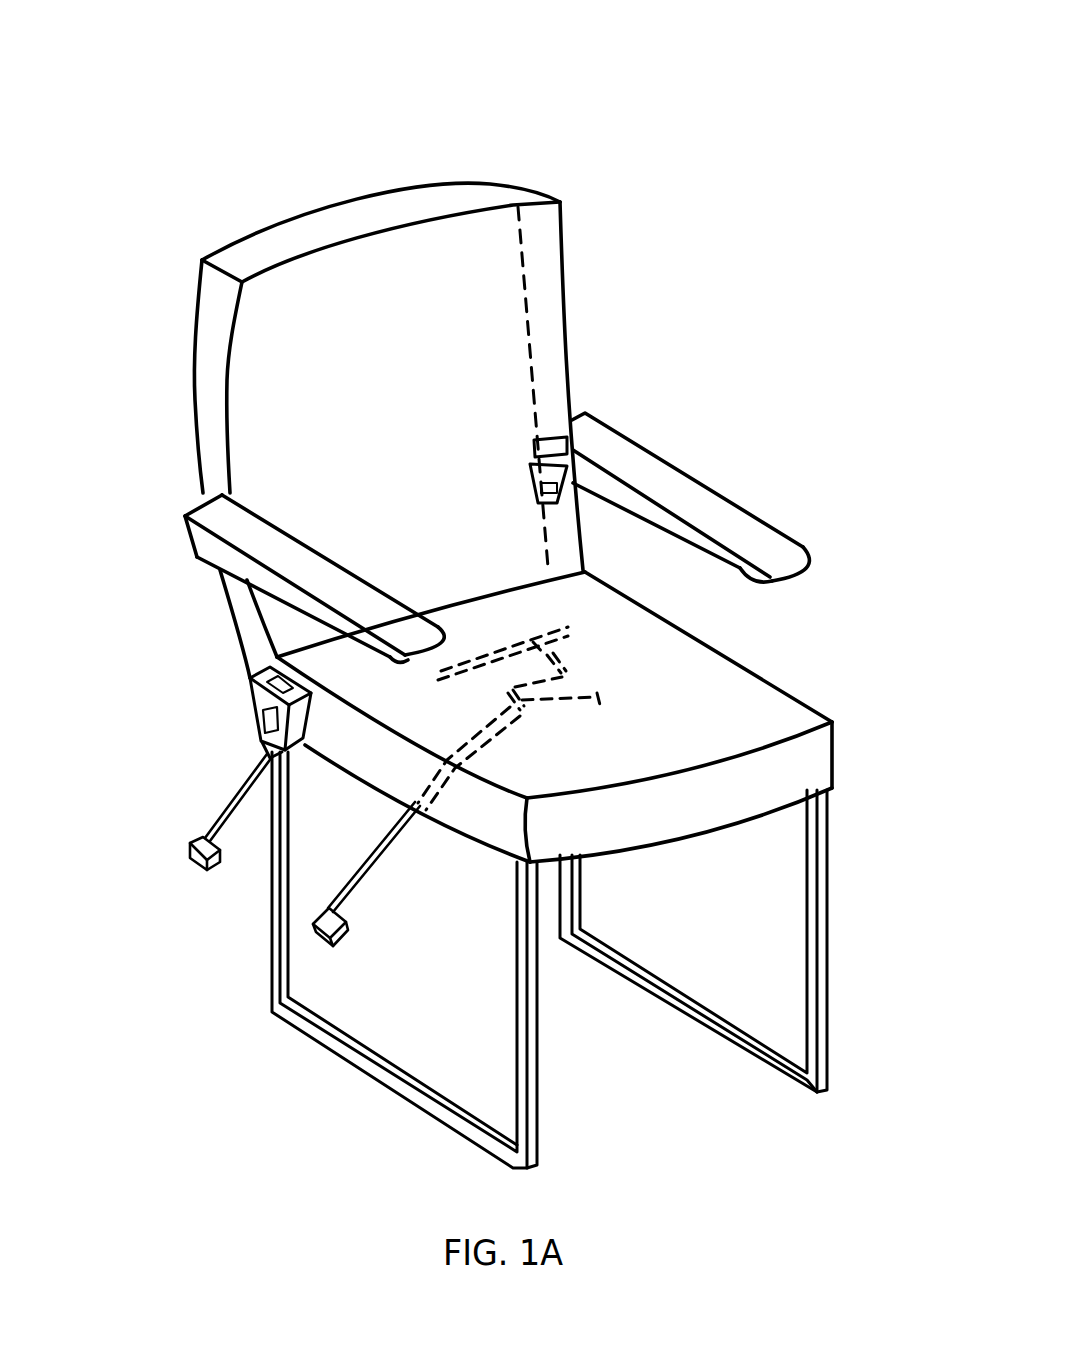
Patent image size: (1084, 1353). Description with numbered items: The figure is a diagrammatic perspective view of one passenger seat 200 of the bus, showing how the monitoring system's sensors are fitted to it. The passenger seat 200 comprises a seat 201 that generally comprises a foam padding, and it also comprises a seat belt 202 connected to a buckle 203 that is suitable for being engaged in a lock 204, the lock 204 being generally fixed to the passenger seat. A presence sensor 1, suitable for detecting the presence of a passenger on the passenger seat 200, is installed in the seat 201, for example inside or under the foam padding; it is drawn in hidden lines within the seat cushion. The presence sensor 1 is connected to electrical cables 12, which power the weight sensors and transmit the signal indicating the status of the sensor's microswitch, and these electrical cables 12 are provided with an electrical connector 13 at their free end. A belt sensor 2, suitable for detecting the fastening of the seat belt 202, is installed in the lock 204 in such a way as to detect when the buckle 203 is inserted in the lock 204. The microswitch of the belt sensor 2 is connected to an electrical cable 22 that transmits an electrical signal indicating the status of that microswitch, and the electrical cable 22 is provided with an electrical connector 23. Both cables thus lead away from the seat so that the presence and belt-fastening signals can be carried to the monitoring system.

The passenger seat 200 is at (542, 173).
The seat 201 is at (737, 717).
The seat belt 202 is at (550, 447).
The buckle 203 is at (547, 478).
The lock 204 is at (257, 698).
The presence sensor 1 is at (573, 667).
The belt sensor 2 is at (264, 719).
The electrical cable 22 is at (230, 800).
The electrical connector 23 is at (188, 859).
The electrical cables 12 is at (388, 853).
The electrical connector 13 is at (311, 929).